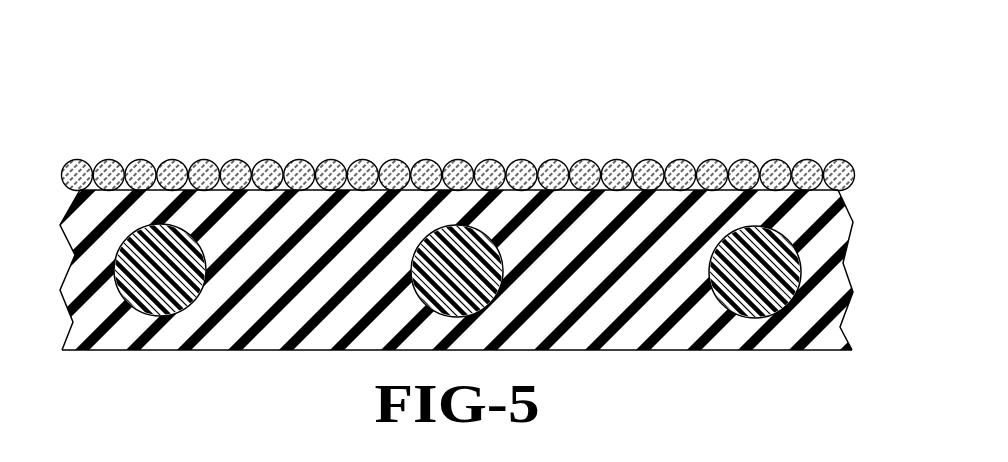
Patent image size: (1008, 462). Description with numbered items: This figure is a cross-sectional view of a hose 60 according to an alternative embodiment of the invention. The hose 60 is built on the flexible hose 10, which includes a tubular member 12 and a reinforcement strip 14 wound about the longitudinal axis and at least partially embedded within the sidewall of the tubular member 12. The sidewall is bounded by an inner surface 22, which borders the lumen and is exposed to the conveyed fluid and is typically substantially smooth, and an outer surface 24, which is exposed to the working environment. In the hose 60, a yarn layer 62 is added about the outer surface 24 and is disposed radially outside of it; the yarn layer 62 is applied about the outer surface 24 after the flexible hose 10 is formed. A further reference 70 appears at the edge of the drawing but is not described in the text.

The flexible hose 10 is at (504, 275).
The tubular member 12 is at (261, 338).
The reinforcement strip 14 is at (447, 248).
The inner surface 22 is at (754, 362).
The outer surface 24 is at (720, 182).
The hose 60 is at (504, 243).
The yarn layer 62 is at (620, 173).
The element 70 is at (60, 459).